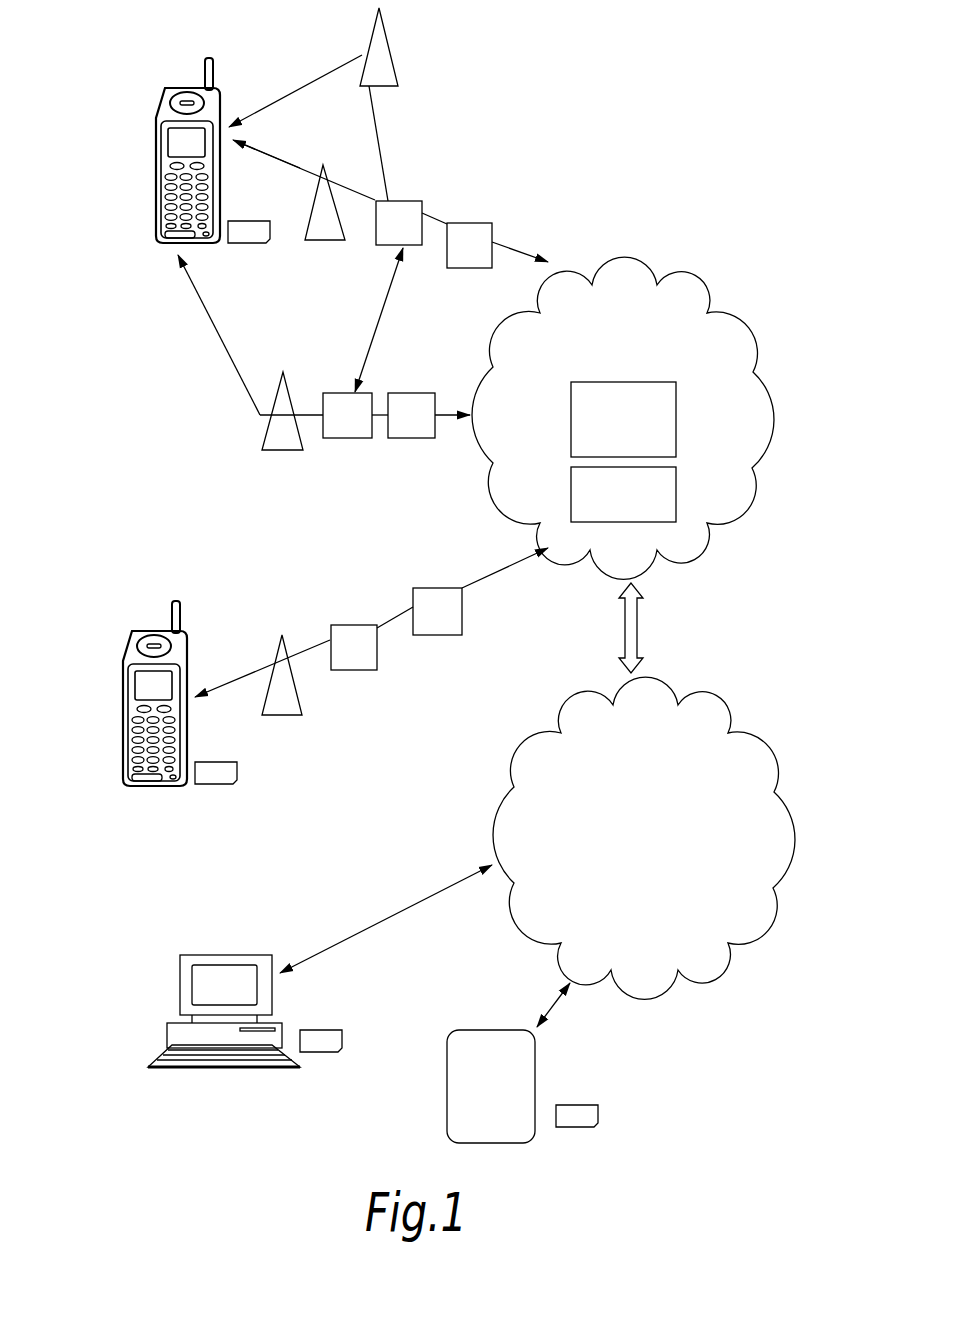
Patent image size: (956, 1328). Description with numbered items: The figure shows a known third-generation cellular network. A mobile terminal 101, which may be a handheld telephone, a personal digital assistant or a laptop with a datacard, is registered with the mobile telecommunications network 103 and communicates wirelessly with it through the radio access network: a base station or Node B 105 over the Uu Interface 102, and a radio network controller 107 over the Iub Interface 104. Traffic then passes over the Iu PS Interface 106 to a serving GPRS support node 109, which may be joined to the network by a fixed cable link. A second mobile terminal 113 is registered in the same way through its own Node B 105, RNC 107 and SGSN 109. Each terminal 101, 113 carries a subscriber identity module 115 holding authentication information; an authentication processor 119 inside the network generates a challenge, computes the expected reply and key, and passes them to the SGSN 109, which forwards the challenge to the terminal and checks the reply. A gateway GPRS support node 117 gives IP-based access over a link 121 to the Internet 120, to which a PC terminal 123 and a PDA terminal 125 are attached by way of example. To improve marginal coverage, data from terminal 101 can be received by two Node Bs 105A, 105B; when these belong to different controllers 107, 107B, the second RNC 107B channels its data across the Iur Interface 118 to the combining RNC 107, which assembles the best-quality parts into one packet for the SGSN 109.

The mobile terminal 101 is at (221, 100).
The Uu Interface 102 is at (265, 154).
The mobile telecommunications network 103 is at (623, 265).
The Iub Interface 104 is at (363, 188).
The base station (Node B) 105 is at (322, 163).
The first nodeB 105A is at (388, 35).
The second nodeB 105B is at (280, 370).
The Iu PS Interface 106 is at (435, 218).
The radio network controller (RNC) 107 is at (395, 208).
The second radio network controller (RNC) 107B is at (343, 398).
The serving GPRS support node (SGSN) 109 is at (467, 230).
The mobile terminal 113 is at (122, 698).
The subscriber identity module (SIM) 115 is at (247, 236).
The gateway GPRS support node (GGSN) 117 is at (620, 395).
The Iur Interface 118 is at (380, 330).
The authentication processor 119 is at (676, 500).
The Internet 120 is at (772, 740).
The link 121 is at (637, 632).
The PC terminal 123 is at (170, 1033).
The PDA terminal 125 is at (462, 1115).